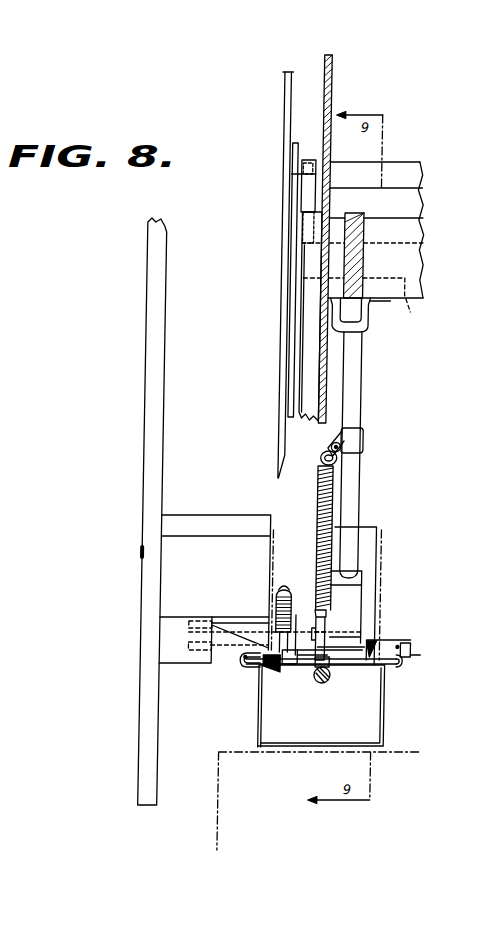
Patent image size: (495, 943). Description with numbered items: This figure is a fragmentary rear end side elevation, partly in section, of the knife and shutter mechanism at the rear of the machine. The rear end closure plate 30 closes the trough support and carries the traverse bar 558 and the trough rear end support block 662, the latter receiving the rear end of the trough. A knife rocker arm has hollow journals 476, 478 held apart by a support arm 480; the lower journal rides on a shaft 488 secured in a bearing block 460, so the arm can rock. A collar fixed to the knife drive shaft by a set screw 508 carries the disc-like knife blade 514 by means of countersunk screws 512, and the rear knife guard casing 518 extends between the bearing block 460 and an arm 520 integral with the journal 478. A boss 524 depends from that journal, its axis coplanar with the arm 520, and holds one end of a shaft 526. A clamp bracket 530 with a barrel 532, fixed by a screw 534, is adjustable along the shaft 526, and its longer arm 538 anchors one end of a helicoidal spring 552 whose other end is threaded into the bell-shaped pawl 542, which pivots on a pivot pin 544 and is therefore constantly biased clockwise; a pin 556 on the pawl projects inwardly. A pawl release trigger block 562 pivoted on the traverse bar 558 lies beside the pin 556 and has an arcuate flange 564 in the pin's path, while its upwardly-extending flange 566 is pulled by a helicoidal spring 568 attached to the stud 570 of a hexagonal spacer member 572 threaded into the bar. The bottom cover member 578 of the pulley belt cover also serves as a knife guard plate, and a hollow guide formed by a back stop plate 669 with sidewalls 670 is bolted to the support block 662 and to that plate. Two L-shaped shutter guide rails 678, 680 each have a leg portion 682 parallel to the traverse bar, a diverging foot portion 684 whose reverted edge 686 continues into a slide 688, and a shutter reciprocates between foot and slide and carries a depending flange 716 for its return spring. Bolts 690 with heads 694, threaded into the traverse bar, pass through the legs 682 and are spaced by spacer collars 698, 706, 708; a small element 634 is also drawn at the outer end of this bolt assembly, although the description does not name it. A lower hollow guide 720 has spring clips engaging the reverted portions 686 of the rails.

The rear end closure plate 30 is at (162, 405).
The bearing block 460 is at (309, 422).
The journal 476 is at (406, 162).
The journal 478 is at (413, 293).
The support arm 480 is at (413, 212).
The shaft 488 is at (421, 302).
The set screw 508 is at (308, 210).
The countersunk screws 512 is at (277, 165).
The knife blade 514 is at (277, 285).
The rear knife guard casing 518 is at (326, 75).
The arm 520 is at (359, 265).
The boss 524 is at (367, 330).
The shaft 526 is at (359, 390).
The clamp bracket 530 is at (362, 435).
The clamp bracket barrel 532 is at (340, 448).
The screw 534 is at (338, 452).
The clamp bracket arm 538 is at (337, 458).
The bell-shaped pawl 542 is at (334, 625).
The pivot pin 544 is at (382, 612).
The helicoidal spring 552 is at (317, 507).
The pin 556 is at (299, 613).
The traverse bar 558 is at (179, 613).
The pawl release trigger block 562 is at (275, 672).
The arcuate flange 564 is at (292, 666).
The upwardly-extending flange 566 is at (277, 595).
The helicoidal spring 568 is at (278, 583).
The stud 570 is at (290, 143).
The hexagonal spacer member 572 is at (227, 617).
The bottom cover member 578 is at (361, 577).
The stop 634 is at (413, 647).
The trough rear end support block 662 is at (211, 516).
The back stop plate 669 is at (384, 580).
The sidewall 670 is at (377, 544).
The shutter guide rail 678 is at (215, 632).
The shutter guide rail 680 is at (387, 637).
The leg portion 682 is at (243, 656).
The foot portion 684 is at (263, 659).
The reverted edge 686 is at (245, 665).
The slide 688 is at (266, 680).
The bolt 690 is at (200, 653).
The head 694 is at (423, 654).
The spacer collar 698 is at (206, 670).
The spacer collar 706 is at (370, 652).
The spacer collar 708 is at (394, 641).
The flange 716 is at (333, 684).
The hollow guide 720 is at (388, 727).